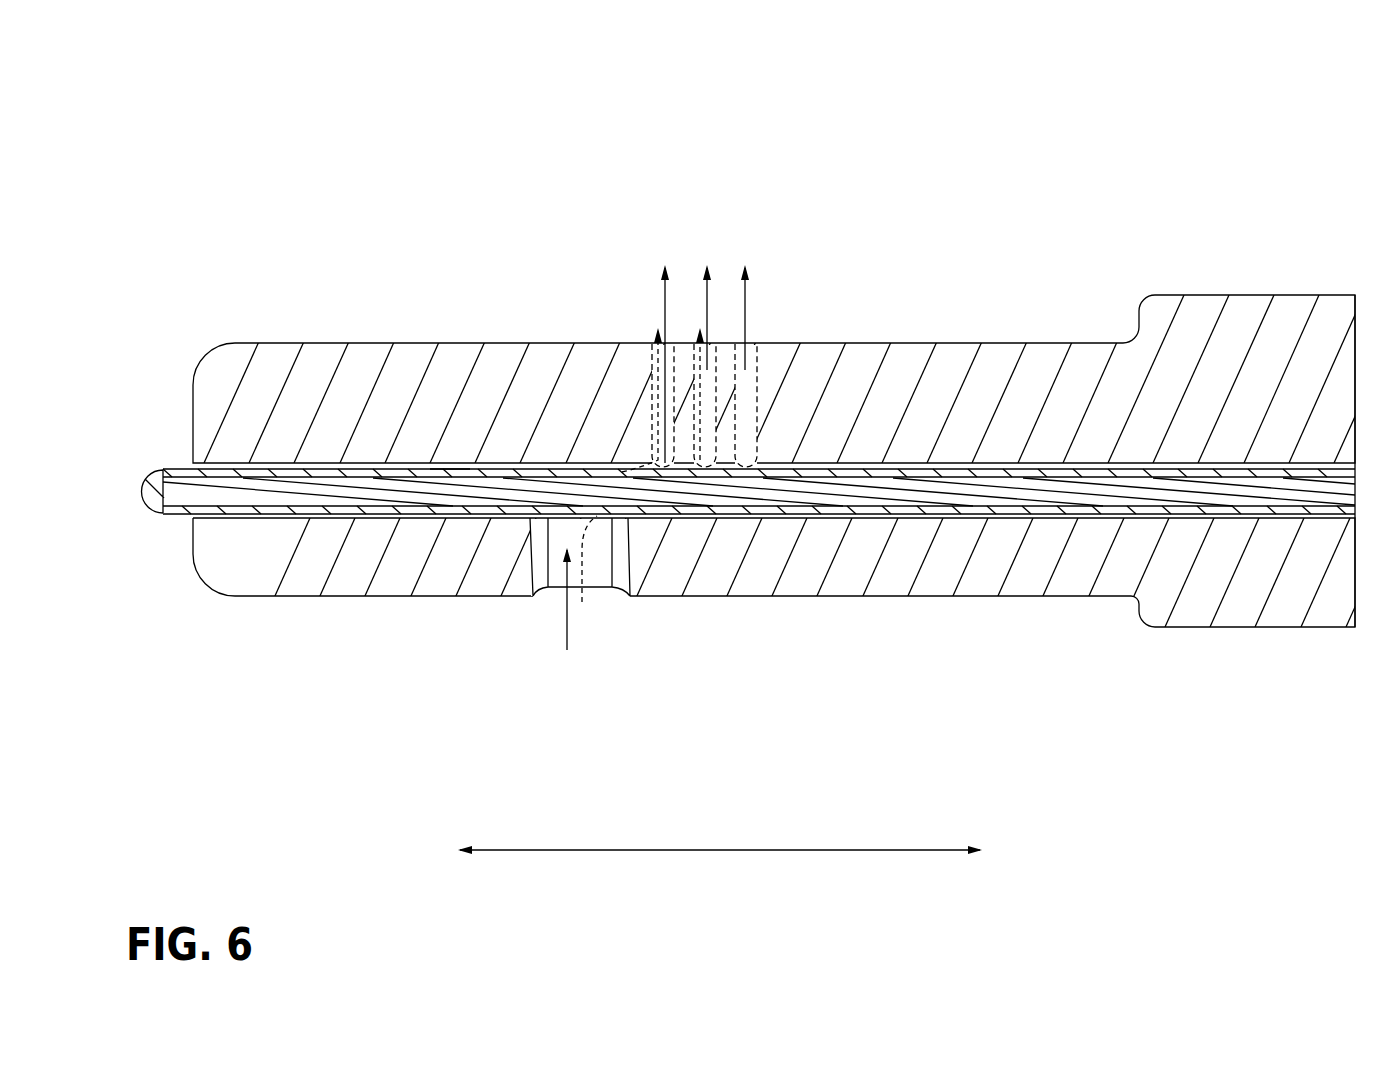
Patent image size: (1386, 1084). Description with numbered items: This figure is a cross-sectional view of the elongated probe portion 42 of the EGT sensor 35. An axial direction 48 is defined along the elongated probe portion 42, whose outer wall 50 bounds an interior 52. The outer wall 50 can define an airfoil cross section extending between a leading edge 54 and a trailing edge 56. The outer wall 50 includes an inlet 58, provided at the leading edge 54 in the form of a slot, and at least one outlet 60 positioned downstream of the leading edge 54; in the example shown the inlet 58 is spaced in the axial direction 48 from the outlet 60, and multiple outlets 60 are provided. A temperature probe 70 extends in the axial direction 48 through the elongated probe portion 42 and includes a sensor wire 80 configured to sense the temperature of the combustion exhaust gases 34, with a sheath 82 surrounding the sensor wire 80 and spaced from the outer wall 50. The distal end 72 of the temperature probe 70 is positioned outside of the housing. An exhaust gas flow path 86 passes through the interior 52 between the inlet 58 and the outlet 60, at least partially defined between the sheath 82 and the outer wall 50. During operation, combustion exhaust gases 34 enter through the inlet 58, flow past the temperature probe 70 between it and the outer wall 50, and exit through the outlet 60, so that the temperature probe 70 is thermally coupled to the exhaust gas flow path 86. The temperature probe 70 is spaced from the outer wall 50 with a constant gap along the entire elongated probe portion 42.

The EGT sensor 35 is at (266, 148).
The elongated probe portion 42 is at (293, 335).
The outer wall 50 is at (403, 365).
The leading edge 54 is at (931, 598).
The trailing edge 56 is at (951, 342).
The inlet 58 is at (597, 588).
The outlet 60 is at (757, 345).
The combustion exhaust gases 34 is at (662, 296).
The exhaust gas flow path 86 is at (647, 378).
The sensor wire 80 is at (398, 490).
The sheath 82 is at (350, 510).
The interior 52 is at (443, 466).
The temperature probe 70 is at (152, 522).
The distal end 72 is at (157, 480).
The axial direction 48 is at (708, 851).